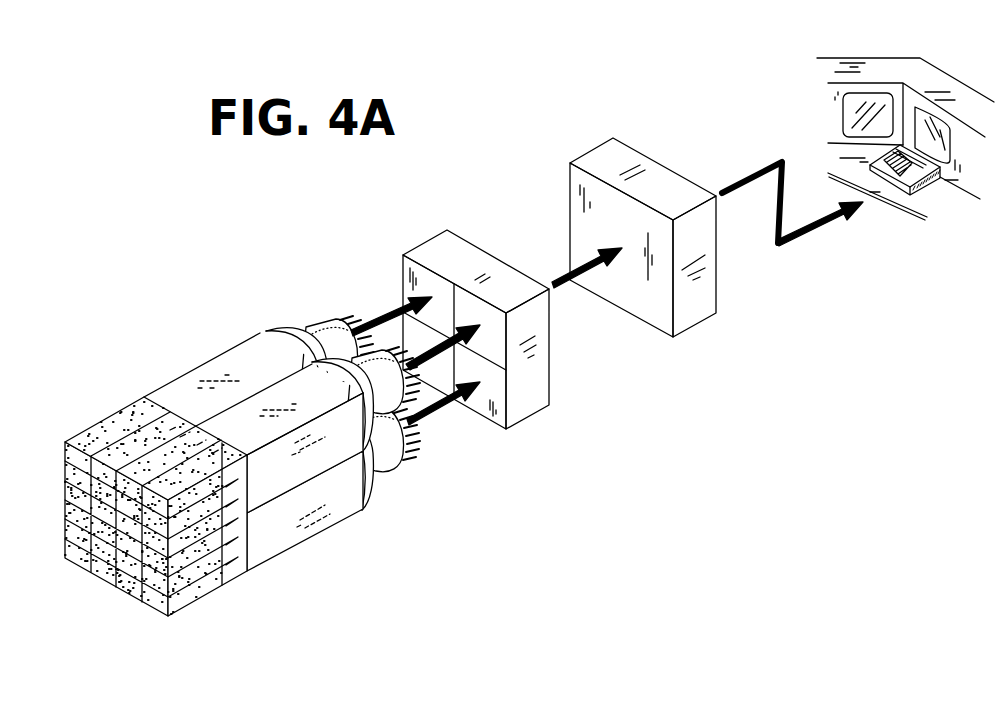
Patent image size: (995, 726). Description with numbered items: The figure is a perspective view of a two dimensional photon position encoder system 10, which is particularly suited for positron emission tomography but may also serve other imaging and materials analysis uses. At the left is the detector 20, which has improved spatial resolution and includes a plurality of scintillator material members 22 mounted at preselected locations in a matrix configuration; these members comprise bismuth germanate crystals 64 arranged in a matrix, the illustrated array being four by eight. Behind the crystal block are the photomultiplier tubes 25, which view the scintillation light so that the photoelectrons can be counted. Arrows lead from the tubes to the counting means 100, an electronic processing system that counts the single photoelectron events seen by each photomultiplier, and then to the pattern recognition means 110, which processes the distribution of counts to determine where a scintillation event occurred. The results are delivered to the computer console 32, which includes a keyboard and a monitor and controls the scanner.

The two dimensional photon position encoder system 10 is at (558, 94).
The detector 20 is at (174, 345).
The scintillator material members 22 is at (208, 603).
The photomultiplier tubes 25 is at (315, 524).
The computer console 32 is at (897, 209).
The bismuth germanate crystals 64 is at (168, 463).
The counting means 100 is at (535, 402).
The pattern recognition means 110 is at (683, 320).